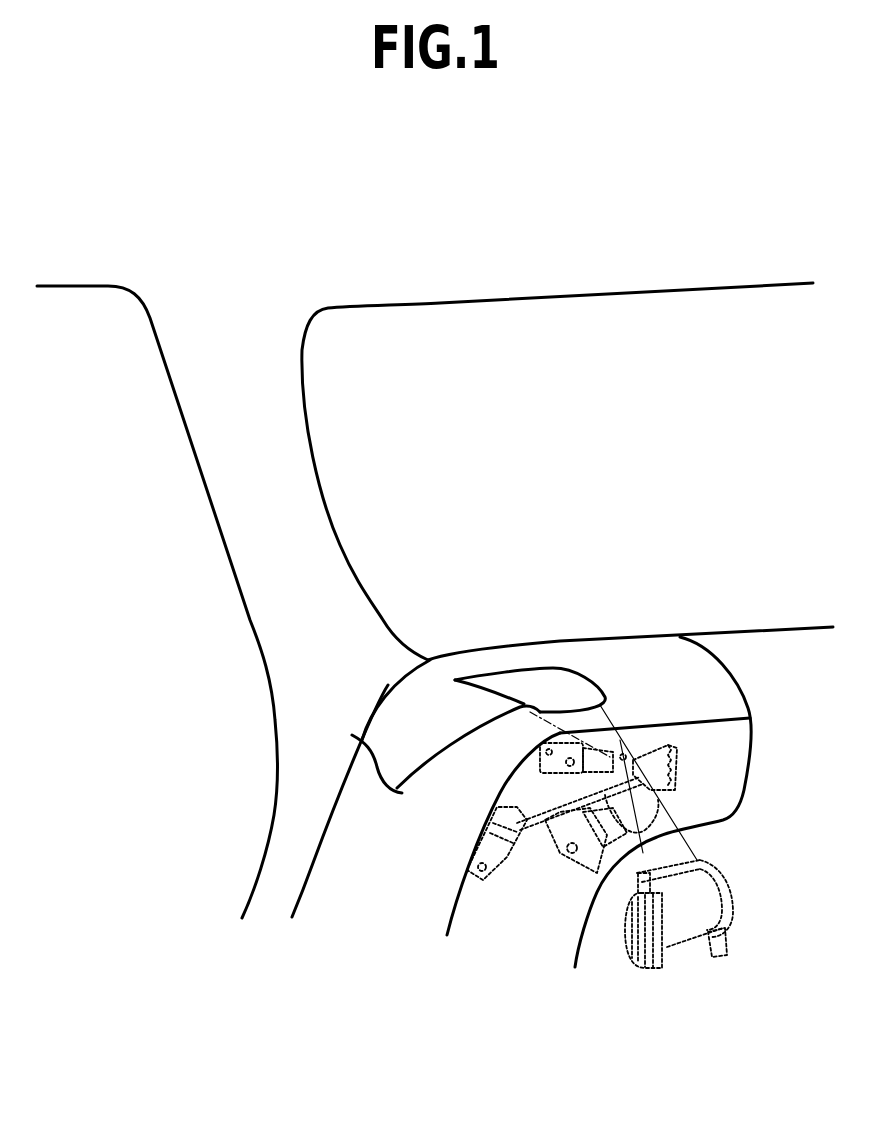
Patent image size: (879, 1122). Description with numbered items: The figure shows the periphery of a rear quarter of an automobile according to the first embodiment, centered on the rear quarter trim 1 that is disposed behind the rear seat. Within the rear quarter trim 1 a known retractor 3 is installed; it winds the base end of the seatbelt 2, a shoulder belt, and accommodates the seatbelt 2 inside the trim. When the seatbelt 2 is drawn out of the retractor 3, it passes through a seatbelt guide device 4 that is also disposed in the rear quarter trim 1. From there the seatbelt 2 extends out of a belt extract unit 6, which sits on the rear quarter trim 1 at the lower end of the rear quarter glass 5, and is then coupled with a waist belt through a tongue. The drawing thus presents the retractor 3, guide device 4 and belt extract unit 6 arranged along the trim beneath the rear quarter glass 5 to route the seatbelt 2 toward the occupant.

The rear quarter trim 1 is at (358, 885).
The seatbelt 2 is at (415, 720).
The retractor 3 is at (733, 892).
The seatbelt guide device 4 is at (717, 762).
The rear quarter glass 5 is at (602, 337).
The belt extract unit 6 is at (537, 682).